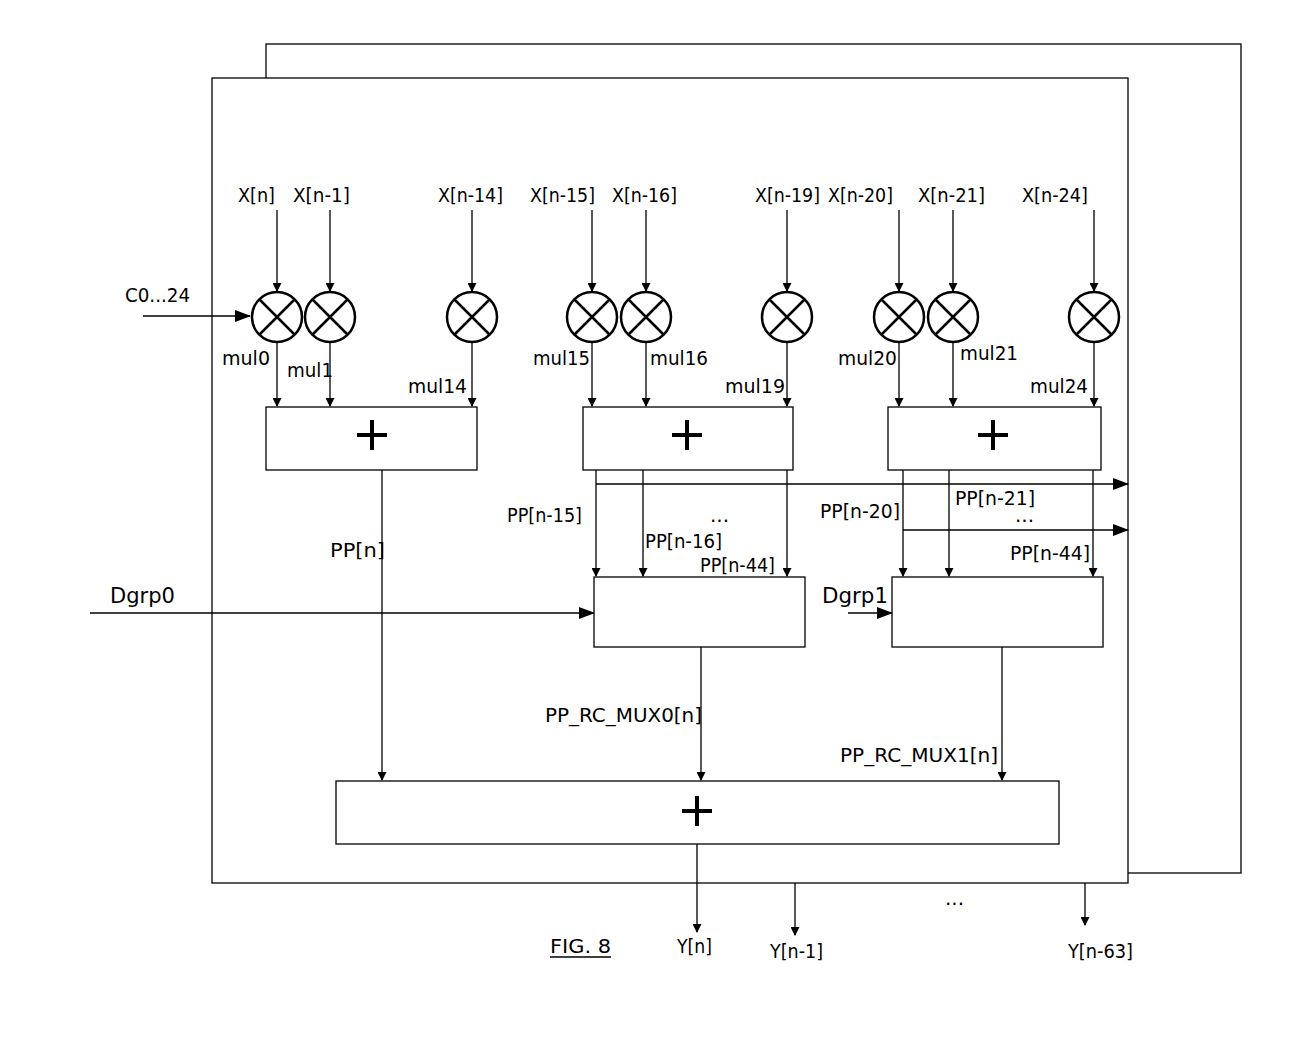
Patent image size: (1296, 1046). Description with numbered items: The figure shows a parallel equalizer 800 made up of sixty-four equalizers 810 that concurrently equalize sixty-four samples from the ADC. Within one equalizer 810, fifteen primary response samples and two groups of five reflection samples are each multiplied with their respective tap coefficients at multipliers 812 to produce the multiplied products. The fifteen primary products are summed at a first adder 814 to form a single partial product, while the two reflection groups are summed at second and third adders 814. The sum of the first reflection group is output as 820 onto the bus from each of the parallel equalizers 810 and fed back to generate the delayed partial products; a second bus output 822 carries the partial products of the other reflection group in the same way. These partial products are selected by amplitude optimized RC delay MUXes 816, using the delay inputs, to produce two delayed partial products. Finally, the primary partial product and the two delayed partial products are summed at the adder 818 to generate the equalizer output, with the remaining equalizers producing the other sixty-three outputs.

The parallel equalizer 800 is at (177, 115).
The equalizer 810 is at (1103, 112).
The multiplier 812 is at (666, 293).
The adder 814 is at (683, 438).
The amplitude optimized RC delay MUX 816 is at (848, 627).
The adder 818 is at (697, 812).
The output 820 is at (884, 482).
The partial product bus 822 is at (1037, 533).